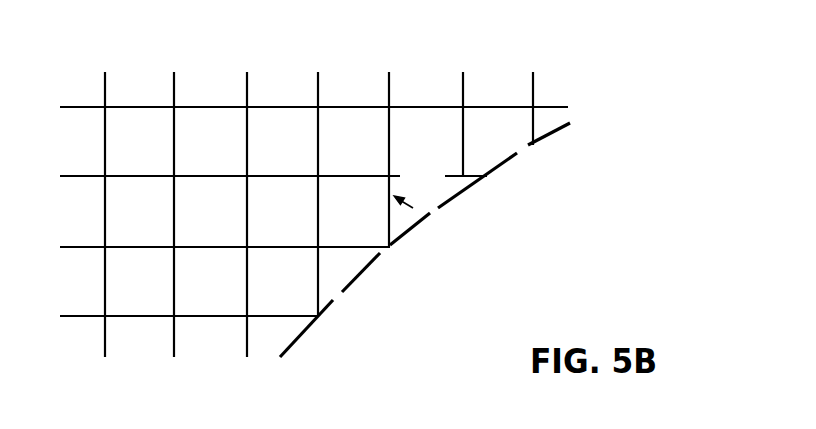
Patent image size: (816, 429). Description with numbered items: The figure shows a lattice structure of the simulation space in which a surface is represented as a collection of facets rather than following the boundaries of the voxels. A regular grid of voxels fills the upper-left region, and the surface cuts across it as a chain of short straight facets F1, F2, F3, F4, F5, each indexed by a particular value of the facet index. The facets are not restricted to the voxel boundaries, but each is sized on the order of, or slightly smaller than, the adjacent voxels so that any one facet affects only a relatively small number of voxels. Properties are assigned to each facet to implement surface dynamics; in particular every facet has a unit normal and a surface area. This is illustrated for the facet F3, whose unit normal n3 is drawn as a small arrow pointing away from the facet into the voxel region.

The unit normal n3 is at (413, 208).
The facet F1 is at (547, 135).
The facet F2 is at (487, 175).
The facet F3 is at (427, 218).
The facet F4 is at (363, 272).
The facet F5 is at (305, 330).